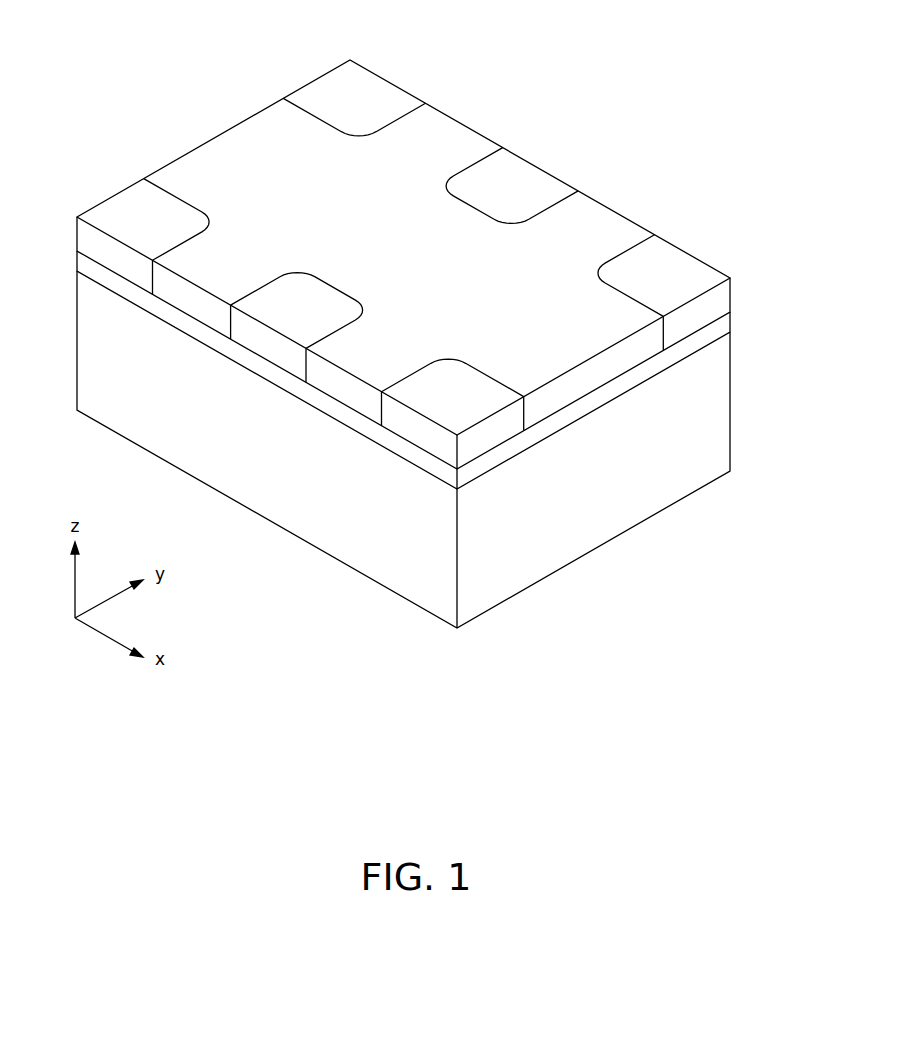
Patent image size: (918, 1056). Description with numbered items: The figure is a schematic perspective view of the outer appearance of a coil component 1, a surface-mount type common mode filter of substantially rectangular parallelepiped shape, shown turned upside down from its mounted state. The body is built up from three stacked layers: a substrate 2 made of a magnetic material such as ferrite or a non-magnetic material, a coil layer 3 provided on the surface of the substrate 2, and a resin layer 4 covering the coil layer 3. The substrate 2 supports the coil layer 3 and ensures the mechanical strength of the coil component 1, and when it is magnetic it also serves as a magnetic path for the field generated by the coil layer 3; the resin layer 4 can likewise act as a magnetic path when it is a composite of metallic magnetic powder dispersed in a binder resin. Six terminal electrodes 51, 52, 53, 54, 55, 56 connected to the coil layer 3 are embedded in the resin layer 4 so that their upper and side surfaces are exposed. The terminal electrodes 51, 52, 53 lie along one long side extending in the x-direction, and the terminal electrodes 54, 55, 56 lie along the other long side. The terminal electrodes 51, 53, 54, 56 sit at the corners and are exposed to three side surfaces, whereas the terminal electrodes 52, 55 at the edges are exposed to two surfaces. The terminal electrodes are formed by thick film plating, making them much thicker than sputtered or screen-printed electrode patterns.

The coil component 1 is at (717, 40).
The substrate 2 is at (716, 433).
The coil layer 3 is at (718, 325).
The resin layer 4 is at (607, 228).
The terminal electrode 51 is at (683, 267).
The terminal electrode 52 is at (526, 183).
The terminal electrode 53 is at (370, 92).
The terminal electrode 54 is at (440, 405).
The terminal electrode 55 is at (285, 320).
The terminal electrode 56 is at (110, 212).